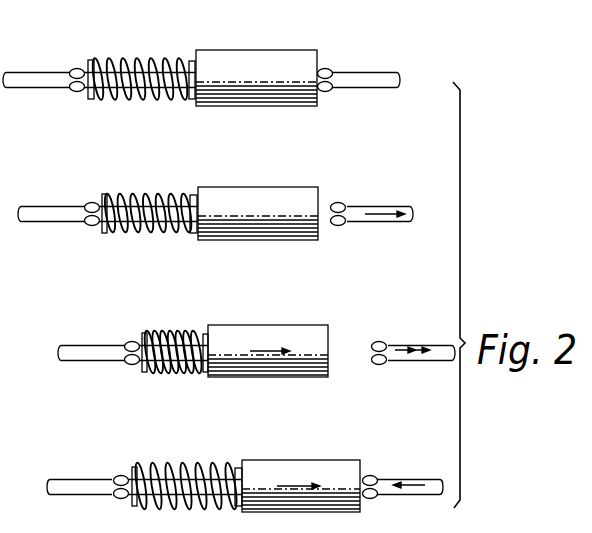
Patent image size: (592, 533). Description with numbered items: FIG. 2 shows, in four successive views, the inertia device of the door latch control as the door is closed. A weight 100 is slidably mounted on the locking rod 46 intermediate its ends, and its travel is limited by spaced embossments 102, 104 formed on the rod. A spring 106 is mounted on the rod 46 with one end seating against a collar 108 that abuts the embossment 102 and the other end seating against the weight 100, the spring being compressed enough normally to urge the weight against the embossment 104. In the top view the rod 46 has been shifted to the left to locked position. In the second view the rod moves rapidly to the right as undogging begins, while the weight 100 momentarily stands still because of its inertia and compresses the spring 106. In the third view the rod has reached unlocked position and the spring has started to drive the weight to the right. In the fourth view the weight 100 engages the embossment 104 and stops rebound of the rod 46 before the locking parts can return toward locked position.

The locking rod 46 is at (22, 72).
The weight 100 is at (237, 62).
The embossment 102 is at (76, 68).
The embossment 104 is at (331, 68).
The spring 106 is at (142, 58).
The collar 108 is at (80, 92).